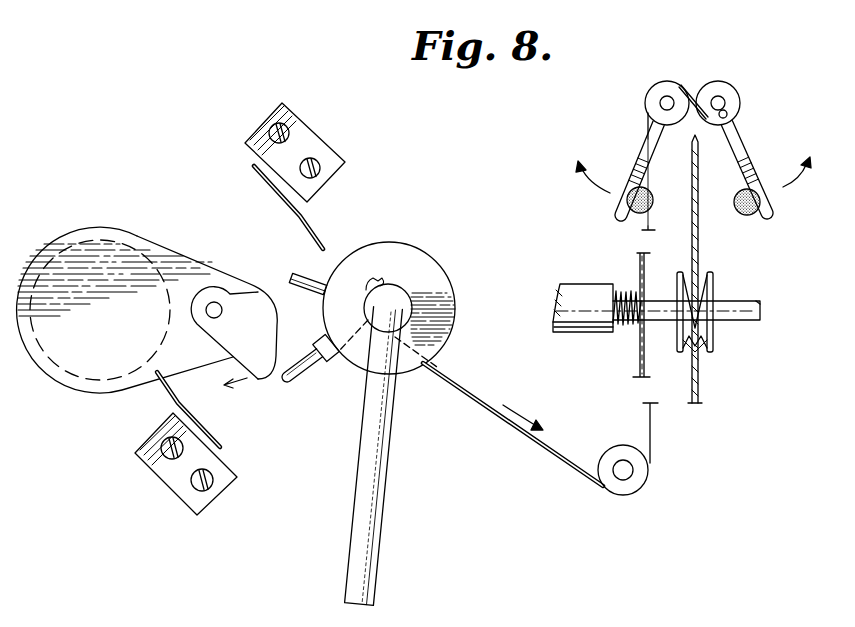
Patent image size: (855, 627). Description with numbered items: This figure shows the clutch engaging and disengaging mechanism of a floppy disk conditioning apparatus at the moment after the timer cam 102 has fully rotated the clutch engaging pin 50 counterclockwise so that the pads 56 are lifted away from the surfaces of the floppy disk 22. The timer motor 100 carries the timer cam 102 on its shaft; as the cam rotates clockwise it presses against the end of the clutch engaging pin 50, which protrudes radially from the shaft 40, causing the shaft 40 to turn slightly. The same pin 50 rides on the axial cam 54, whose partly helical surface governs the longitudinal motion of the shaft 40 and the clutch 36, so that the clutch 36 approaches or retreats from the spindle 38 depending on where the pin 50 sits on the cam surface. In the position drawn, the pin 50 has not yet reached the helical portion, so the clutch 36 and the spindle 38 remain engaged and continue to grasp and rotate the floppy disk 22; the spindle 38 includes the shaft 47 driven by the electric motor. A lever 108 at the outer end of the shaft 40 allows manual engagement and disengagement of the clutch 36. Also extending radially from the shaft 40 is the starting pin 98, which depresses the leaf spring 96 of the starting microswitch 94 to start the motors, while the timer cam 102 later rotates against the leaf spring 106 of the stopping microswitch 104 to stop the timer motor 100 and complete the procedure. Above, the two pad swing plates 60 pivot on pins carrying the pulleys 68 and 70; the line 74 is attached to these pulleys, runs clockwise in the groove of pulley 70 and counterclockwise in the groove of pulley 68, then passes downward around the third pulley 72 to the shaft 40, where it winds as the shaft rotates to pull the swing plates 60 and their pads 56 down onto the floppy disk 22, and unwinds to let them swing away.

The timer motor 100 is at (98, 242).
The timer cam 102 is at (233, 328).
The stopping microswitch 104 is at (177, 486).
The leaf spring 106 is at (187, 400).
The lever 108 is at (389, 493).
The starting microswitch 94 is at (308, 141).
The leaf spring 96 is at (303, 218).
The starting pin 98 is at (303, 272).
The shaft 40 is at (394, 296).
The axial cam 54 is at (445, 291).
The clutch engaging pin 50 is at (313, 364).
The pulley 68 is at (658, 92).
The pulley 70 is at (728, 93).
The line 74 is at (652, 425).
The pad swing plate 60 is at (643, 150).
The pad 56 is at (632, 213).
The clutch 36 is at (696, 270).
The spindle 38 is at (716, 286).
The shaft 47 is at (740, 316).
The floppy disk 22 is at (700, 386).
The third pulley 72 is at (632, 495).